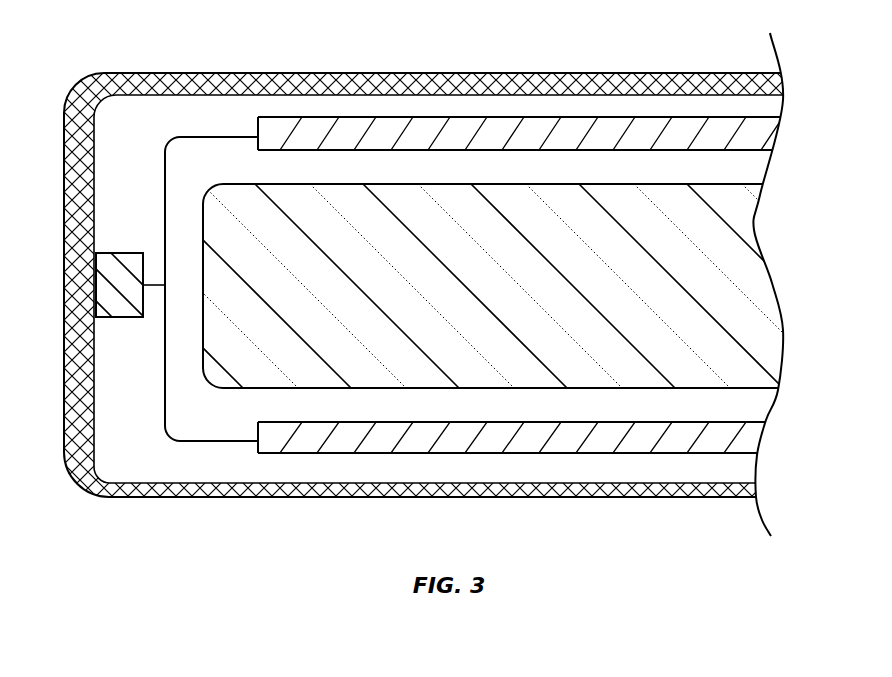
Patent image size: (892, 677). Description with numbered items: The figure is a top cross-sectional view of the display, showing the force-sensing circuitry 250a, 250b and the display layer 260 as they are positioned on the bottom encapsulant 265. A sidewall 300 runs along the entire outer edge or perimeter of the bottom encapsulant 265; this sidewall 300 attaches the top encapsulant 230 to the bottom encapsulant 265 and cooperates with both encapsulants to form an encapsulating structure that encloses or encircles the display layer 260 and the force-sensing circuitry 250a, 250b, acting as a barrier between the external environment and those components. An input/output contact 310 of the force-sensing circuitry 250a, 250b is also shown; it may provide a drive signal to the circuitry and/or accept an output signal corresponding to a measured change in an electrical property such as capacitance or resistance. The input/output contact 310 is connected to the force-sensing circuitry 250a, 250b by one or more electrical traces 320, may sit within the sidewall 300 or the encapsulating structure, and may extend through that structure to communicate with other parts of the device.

The sidewall 300 is at (368, 73).
The top encapsulant 230 is at (772, 100).
The force-sensing circuitry 250a is at (780, 131).
The force-sensing circuitry 250b is at (770, 432).
The display layer 260 is at (773, 280).
The bottom encapsulant 265 is at (748, 470).
The input/output contact 310 is at (96, 282).
The electrical trace 320 is at (165, 155).